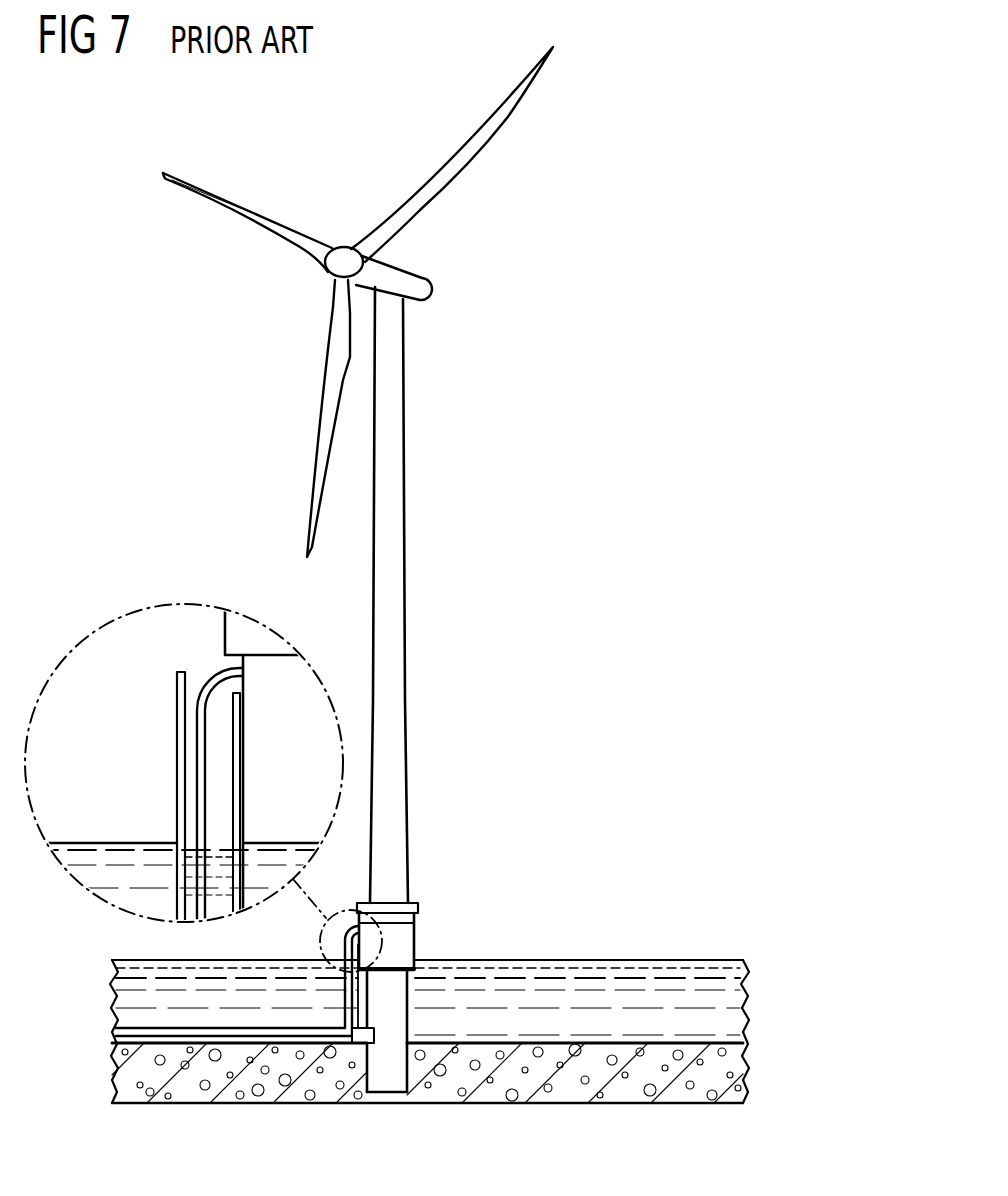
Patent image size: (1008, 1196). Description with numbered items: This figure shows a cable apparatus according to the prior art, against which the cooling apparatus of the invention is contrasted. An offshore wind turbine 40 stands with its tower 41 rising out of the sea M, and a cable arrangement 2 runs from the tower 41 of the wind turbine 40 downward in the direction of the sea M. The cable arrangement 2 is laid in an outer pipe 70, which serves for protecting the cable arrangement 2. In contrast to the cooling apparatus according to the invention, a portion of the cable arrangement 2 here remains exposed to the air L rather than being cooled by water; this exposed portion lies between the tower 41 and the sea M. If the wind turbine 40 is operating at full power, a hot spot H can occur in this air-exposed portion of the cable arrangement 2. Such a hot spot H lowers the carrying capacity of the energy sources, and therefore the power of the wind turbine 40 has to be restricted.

The wind turbine 40 is at (345, 210).
The tower 41 is at (388, 680).
The air L is at (422, 822).
The hot spot H is at (196, 658).
The cable arrangement 2 is at (198, 781).
The outer pipe 70 is at (180, 817).
The sea M is at (722, 1016).